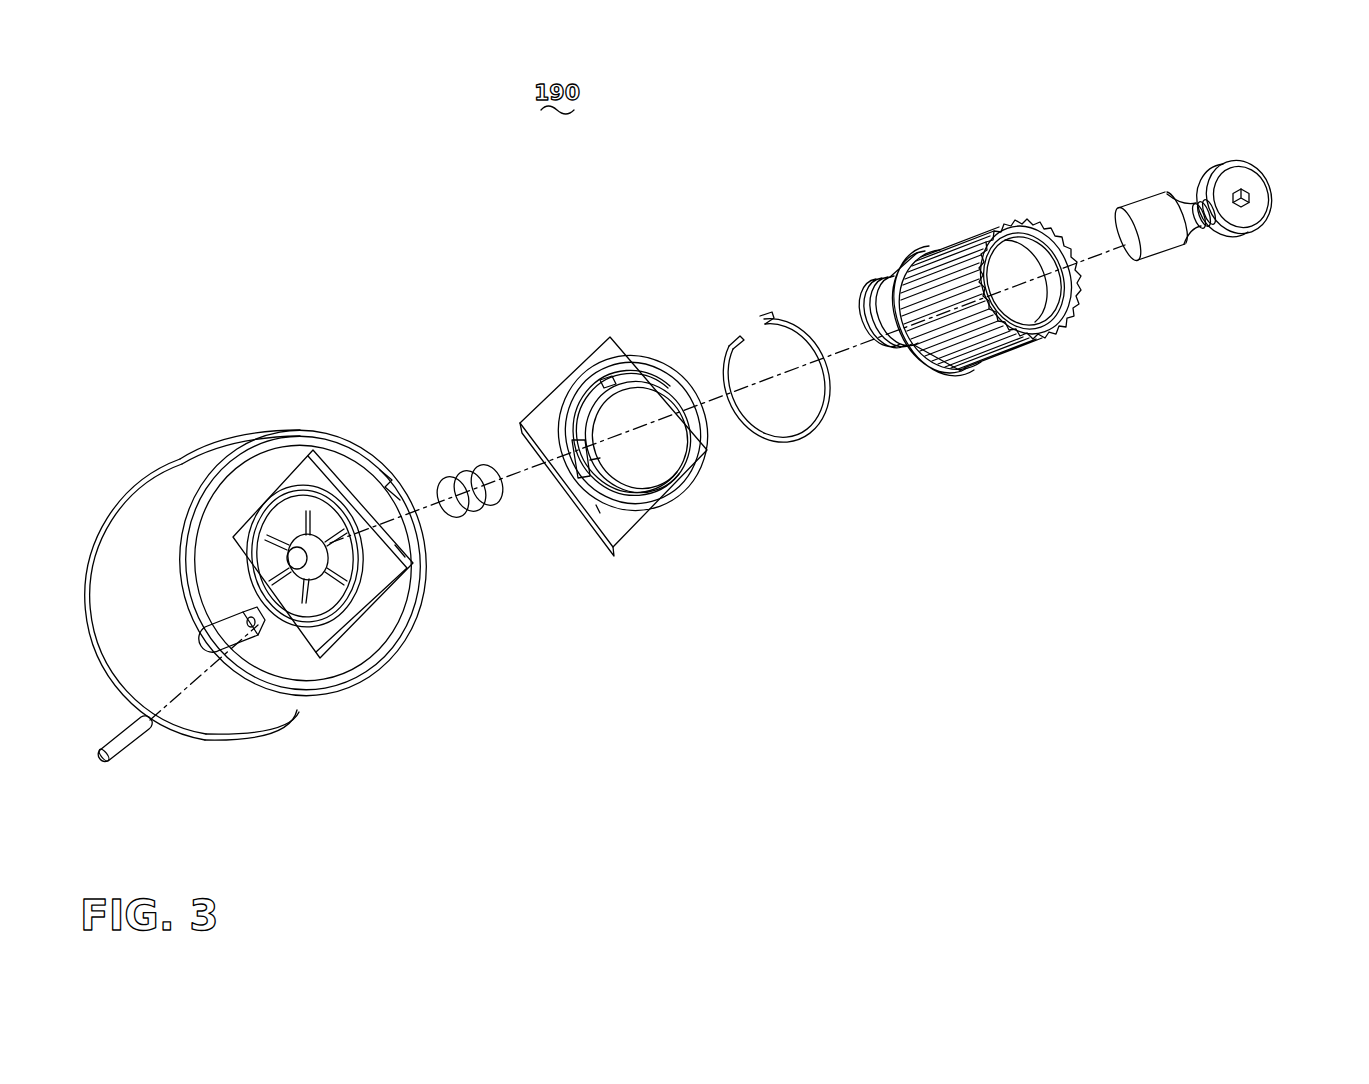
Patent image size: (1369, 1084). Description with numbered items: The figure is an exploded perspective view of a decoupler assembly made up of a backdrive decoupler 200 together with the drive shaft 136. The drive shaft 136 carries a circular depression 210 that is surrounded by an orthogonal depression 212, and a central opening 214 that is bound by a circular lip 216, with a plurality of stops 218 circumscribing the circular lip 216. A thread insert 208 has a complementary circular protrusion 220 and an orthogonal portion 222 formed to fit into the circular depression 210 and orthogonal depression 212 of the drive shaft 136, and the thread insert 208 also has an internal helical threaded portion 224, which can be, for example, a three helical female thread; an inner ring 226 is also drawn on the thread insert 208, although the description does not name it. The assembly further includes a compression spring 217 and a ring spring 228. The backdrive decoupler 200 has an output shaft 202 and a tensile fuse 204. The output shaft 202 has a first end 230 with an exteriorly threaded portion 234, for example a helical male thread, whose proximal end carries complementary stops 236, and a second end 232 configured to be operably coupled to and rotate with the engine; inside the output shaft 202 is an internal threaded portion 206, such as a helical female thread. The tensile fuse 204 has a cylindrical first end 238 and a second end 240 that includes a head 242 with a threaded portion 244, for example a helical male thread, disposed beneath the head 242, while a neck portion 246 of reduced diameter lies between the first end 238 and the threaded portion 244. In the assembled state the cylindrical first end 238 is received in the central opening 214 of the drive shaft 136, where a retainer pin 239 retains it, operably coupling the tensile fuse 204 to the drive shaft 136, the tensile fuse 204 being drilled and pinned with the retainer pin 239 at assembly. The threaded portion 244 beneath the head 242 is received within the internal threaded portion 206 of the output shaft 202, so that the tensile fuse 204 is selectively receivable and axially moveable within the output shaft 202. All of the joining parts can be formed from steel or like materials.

The drive shaft 136 is at (205, 436).
The backdrive decoupler 200 is at (833, 215).
The output shaft 202 is at (1015, 372).
The tensile fuse 204 is at (1192, 190).
The internal threaded portion 206 is at (854, 306).
The thread insert 208 is at (654, 537).
The circular depression 210 is at (312, 500).
The orthogonal depression 212 is at (380, 566).
The central opening 214 is at (336, 582).
The circular lip 216 is at (300, 540).
The compression spring 217 is at (478, 468).
The stops 218 is at (348, 587).
The circular protrusion 220 is at (600, 397).
The orthogonal portion 222 is at (597, 530).
The internal helical threaded portion 224 is at (657, 380).
The ring 226 is at (677, 443).
The ring spring 228 is at (797, 437).
The first end 230 is at (920, 367).
The second end 232 is at (1043, 337).
The exteriorly threaded portion 234 is at (892, 283).
The complementary stops 236 is at (877, 363).
The cylindrical first end 238 is at (1147, 248).
The retainer pin 239 is at (128, 750).
The second end 240 is at (1248, 235).
The head 242 is at (1258, 212).
The threaded portion 244 is at (1212, 230).
The neck portion 246 is at (1195, 222).